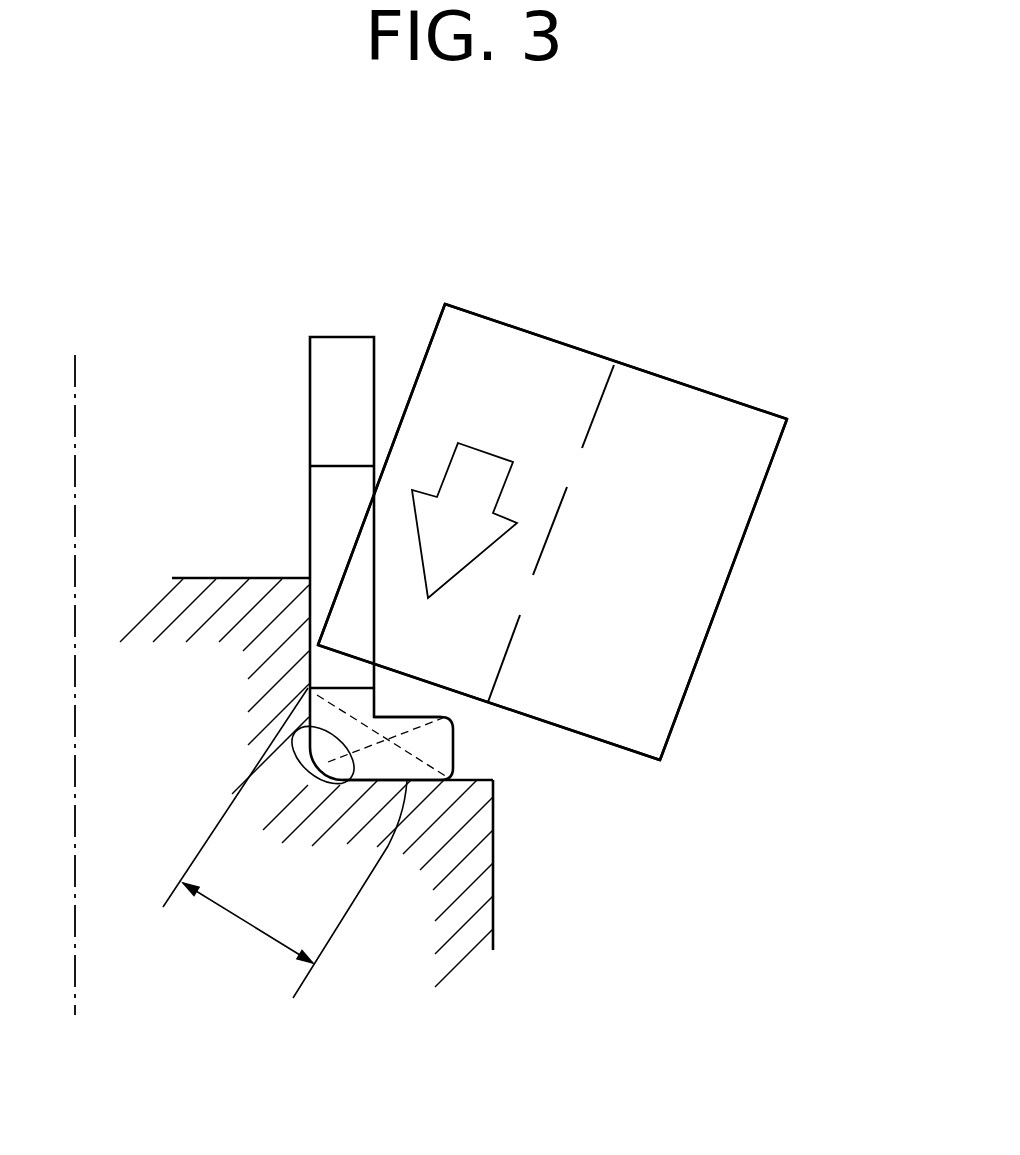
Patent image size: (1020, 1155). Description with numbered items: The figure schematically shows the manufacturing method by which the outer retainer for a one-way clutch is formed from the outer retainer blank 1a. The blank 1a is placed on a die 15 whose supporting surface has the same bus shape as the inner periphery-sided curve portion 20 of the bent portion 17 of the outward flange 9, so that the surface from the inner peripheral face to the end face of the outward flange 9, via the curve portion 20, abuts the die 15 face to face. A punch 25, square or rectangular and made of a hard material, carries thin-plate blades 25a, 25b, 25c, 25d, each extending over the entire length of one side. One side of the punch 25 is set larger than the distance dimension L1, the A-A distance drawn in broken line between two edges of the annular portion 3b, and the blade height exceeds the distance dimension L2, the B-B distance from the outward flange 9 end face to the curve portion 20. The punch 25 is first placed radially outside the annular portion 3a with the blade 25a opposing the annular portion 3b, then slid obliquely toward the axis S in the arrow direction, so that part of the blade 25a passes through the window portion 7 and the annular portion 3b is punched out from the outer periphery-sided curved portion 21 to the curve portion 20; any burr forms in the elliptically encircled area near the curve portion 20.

The outer retainer blank 1a is at (355, 283).
The annular portion 3a is at (337, 401).
The annular portion 3b is at (368, 768).
The window portion 7 is at (325, 571).
The outward flange 9 is at (403, 768).
The die 15 is at (480, 912).
The bent portion 17 is at (318, 724).
The inner periphery-sided curve portion 20 is at (307, 780).
The outer periphery-sided curved portion 21 is at (387, 713).
The punch 25 is at (603, 673).
The thin-plate blade 25a is at (587, 737).
The thin-plate blade 25b is at (765, 478).
The thin-plate blade 25c is at (530, 332).
The thin-plate blade 25d is at (432, 340).
The axis S is at (70, 663).
The distance dimension L1 is at (242, 918).
The distance dimension L2 is at (455, 718).